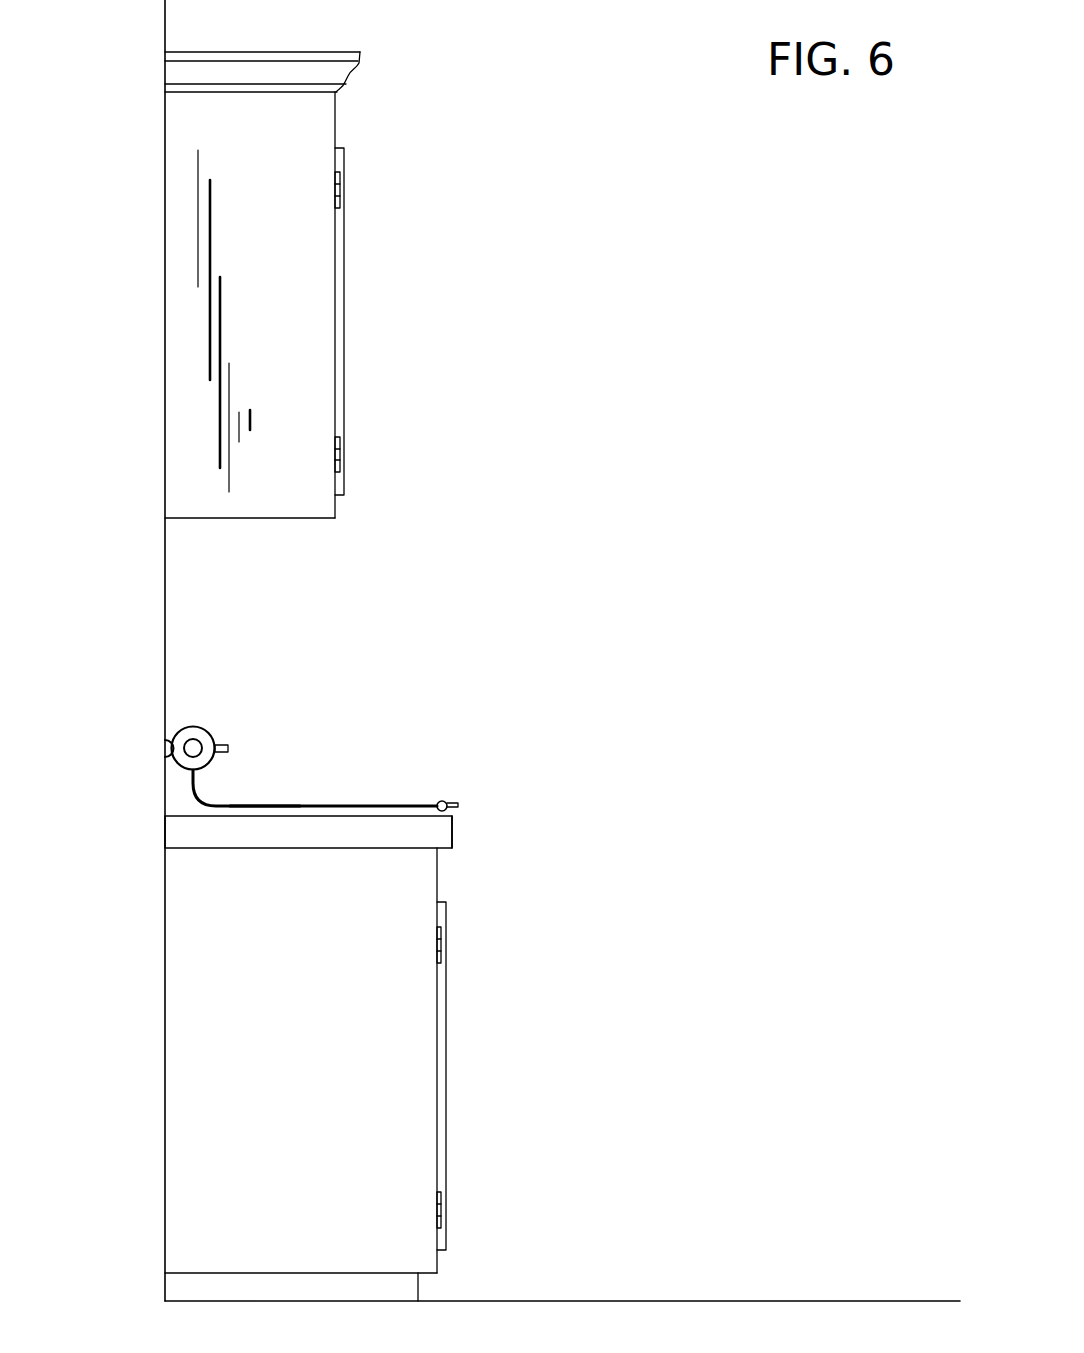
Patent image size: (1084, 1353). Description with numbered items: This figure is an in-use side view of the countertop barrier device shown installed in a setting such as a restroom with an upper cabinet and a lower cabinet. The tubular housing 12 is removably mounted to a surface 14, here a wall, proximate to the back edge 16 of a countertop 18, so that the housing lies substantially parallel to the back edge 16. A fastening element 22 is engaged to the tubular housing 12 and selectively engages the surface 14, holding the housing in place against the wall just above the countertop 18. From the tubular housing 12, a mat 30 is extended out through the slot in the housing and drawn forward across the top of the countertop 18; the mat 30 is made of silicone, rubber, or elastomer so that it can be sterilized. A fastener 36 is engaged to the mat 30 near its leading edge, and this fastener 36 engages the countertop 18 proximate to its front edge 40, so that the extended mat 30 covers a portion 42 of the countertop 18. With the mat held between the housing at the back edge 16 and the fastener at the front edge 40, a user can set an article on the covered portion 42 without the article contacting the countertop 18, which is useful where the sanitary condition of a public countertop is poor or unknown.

The tubular housing 12 is at (215, 710).
The surface 14 is at (180, 668).
The back edge 16 is at (151, 827).
The countertop 18 is at (377, 861).
The fastening element 22 is at (150, 751).
The mat 30 is at (377, 791).
The fastener 36 is at (454, 796).
The front edge 40 is at (467, 832).
The portion 42 is at (260, 803).